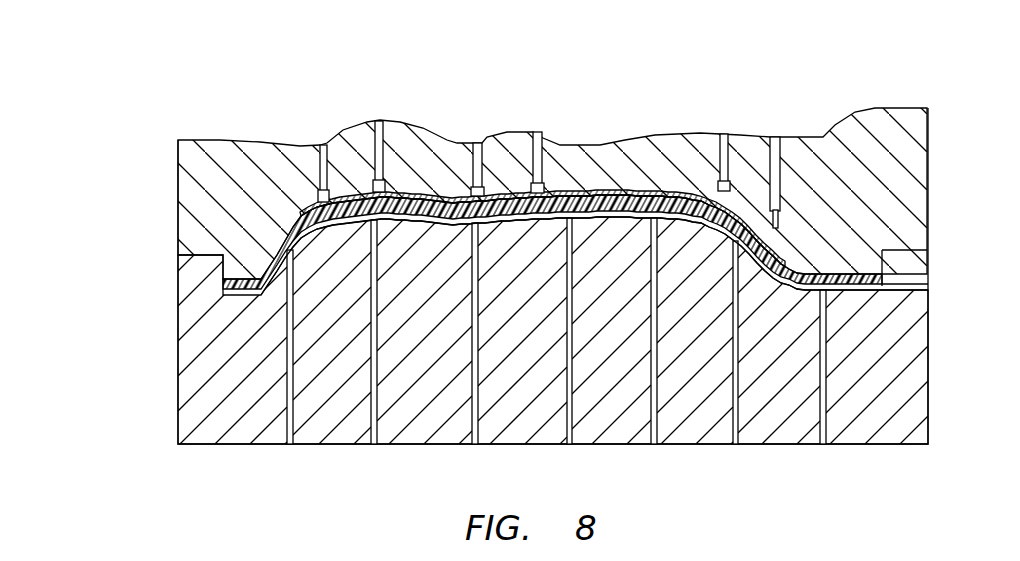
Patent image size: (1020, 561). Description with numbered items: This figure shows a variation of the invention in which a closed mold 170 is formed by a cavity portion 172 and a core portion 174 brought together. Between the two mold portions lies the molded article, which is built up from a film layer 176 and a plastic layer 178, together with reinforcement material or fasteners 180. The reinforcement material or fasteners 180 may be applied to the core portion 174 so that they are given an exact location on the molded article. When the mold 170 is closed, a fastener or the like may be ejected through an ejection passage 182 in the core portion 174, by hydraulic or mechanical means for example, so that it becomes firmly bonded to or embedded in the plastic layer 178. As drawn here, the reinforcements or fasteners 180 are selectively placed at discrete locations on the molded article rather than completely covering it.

The closed mold 170 is at (147, 177).
The cavity portion 172 is at (673, 444).
The core portion 174 is at (687, 136).
The film layer 176 is at (615, 219).
The plastic layer 178 is at (620, 197).
The reinforcement material or fasteners 180 is at (563, 198).
The ejection passage 182 is at (325, 153).